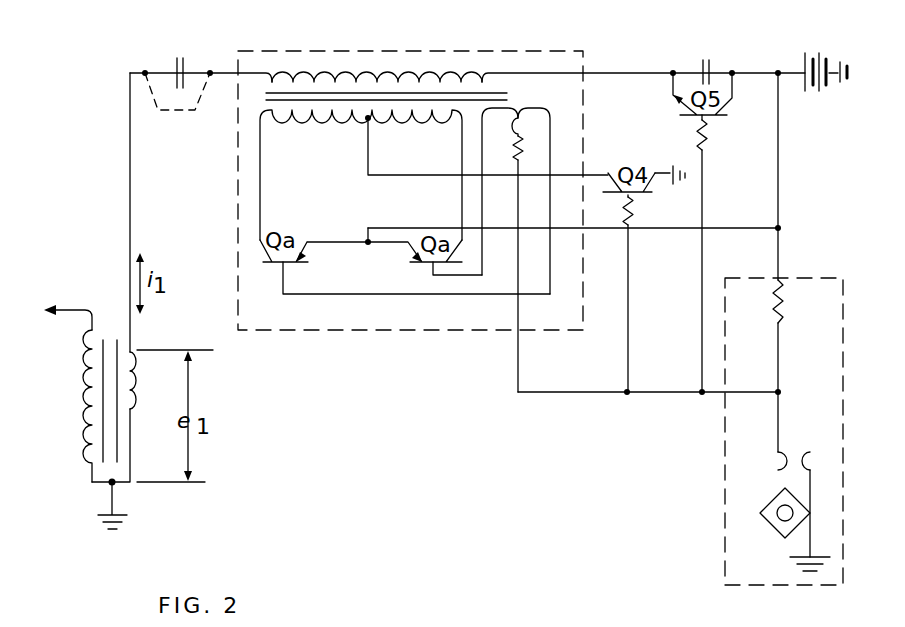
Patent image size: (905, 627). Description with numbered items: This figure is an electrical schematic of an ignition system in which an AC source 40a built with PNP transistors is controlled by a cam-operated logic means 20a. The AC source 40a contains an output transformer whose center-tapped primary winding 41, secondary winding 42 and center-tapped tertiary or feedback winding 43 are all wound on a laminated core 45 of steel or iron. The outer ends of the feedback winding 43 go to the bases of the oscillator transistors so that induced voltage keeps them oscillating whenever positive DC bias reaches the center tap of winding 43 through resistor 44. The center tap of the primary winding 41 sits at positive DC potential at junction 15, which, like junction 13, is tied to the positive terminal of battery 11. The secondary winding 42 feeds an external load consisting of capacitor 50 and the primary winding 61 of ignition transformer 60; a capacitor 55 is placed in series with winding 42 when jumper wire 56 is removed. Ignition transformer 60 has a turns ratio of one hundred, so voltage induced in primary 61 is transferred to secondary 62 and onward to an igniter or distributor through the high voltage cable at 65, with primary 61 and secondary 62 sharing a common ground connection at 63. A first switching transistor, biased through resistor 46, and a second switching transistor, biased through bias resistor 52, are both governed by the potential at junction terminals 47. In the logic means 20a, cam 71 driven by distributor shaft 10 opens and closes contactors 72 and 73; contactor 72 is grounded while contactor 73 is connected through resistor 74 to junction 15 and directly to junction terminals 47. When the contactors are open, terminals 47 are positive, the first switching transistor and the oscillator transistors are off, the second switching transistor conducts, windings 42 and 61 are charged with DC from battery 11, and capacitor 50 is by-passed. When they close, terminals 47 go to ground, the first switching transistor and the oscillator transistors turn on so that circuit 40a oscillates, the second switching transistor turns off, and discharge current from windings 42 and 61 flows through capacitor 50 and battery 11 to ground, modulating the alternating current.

The capacitor 55 is at (177, 72).
The jumper wire 56 is at (163, 112).
The AC source 40a is at (406, 46).
The secondary winding 42 is at (351, 58).
The laminated core 45 is at (510, 93).
The center-tapped primary winding 41 is at (274, 131).
The center-tapped tertiary winding 43 is at (535, 108).
The resistor 44 is at (522, 141).
The capacitor 50 is at (700, 68).
The junction 13 is at (779, 70).
The battery 11 is at (806, 89).
The bias resistor 52 is at (708, 140).
The resistor 46 is at (632, 212).
The junction 15 is at (778, 228).
The ignition transformer 60 is at (102, 303).
The high voltage cable 65 is at (66, 290).
The secondary winding 62 is at (90, 391).
The primary winding 61 is at (133, 380).
The common ground connection 63 is at (115, 488).
The resistor 74 is at (783, 309).
The junction terminals 47 is at (627, 395).
The contactor 73 is at (779, 420).
The contactor 72 is at (828, 428).
The cam 71 is at (782, 495).
The distributor shaft 10 is at (782, 519).
The logic means 20a is at (718, 530).